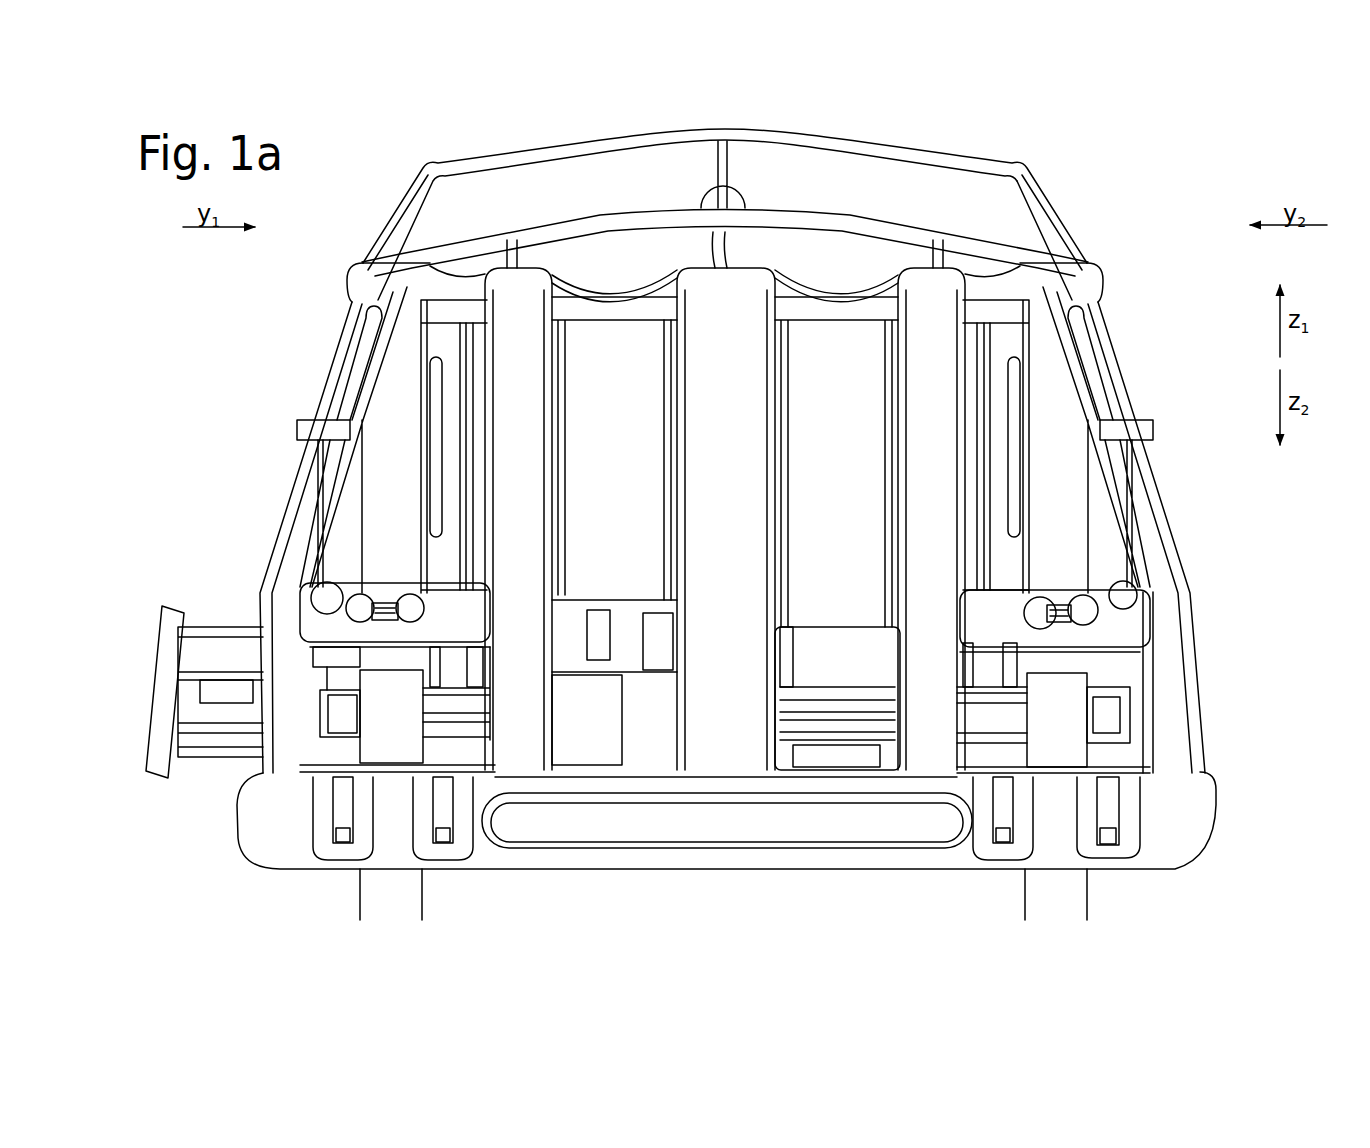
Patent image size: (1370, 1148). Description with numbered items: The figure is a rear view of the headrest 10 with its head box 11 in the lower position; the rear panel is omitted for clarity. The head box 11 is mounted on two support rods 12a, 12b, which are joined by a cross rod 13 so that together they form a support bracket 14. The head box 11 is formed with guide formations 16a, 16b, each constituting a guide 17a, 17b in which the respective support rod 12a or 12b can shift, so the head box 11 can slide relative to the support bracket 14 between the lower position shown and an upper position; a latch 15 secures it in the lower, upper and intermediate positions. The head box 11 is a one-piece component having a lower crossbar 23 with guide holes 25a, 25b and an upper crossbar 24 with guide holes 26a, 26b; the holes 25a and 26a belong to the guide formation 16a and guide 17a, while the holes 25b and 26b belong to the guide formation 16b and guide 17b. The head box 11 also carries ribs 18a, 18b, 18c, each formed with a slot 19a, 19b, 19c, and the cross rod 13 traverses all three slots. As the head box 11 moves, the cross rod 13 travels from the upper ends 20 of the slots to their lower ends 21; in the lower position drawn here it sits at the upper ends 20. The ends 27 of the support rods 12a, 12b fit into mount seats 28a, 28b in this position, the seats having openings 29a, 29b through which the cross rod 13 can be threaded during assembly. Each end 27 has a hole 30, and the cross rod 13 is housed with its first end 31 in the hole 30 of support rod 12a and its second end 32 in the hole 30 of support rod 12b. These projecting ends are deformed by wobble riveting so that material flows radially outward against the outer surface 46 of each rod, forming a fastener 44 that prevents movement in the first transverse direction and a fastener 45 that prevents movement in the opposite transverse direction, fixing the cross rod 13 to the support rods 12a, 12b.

The headrest 10 is at (1190, 227).
The head box 11 is at (997, 223).
The support rod 12a is at (403, 893).
The support rod 12b is at (1040, 903).
The cross rod 13 is at (607, 312).
The support bracket 14 is at (393, 377).
The latch 15 is at (337, 713).
The guide formation 16a is at (373, 613).
The guide formation 16b is at (1066, 637).
The guide 17a is at (372, 576).
The guide 17b is at (1064, 578).
The rib 18a is at (513, 313).
The rib 18b is at (720, 345).
The rib 18c is at (933, 303).
The slot 19a is at (553, 453).
The slot 19b is at (660, 493).
The slot 19c is at (893, 500).
The upper ends 20 is at (470, 278).
The lower ends 21 is at (598, 613).
The lower crossbar 23 is at (373, 812).
The upper crossbar 24 is at (473, 630).
The guide hole 25a is at (352, 733).
The guide hole 25b is at (1075, 757).
The guide hole 26a is at (390, 577).
The guide hole 26b is at (1053, 580).
The ends 27 is at (393, 347).
The mount seat 28a is at (363, 285).
The mount seat 28b is at (1092, 268).
The opening 29a is at (337, 308).
The opening 29b is at (1107, 305).
The hole 30 is at (430, 320).
The first end 31 is at (467, 320).
The second end 32 is at (977, 273).
The fastener 44 is at (340, 298).
The fastener 45 is at (1113, 320).
The outer surface 46 is at (313, 423).